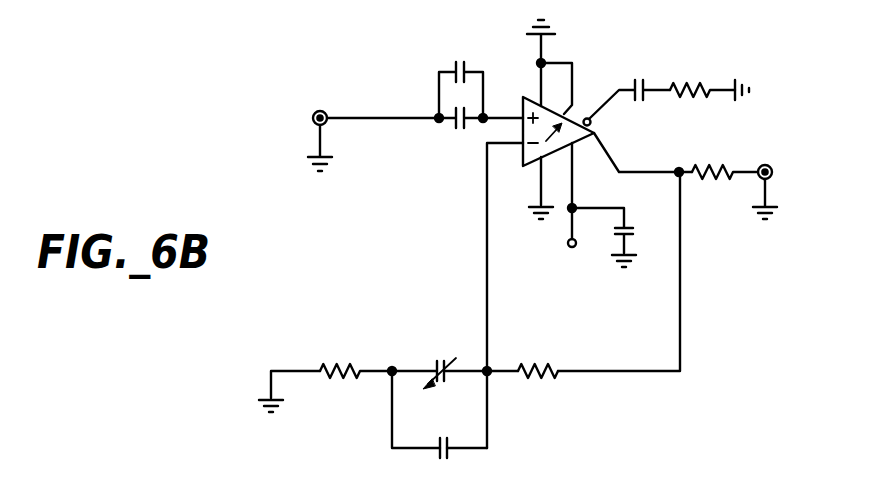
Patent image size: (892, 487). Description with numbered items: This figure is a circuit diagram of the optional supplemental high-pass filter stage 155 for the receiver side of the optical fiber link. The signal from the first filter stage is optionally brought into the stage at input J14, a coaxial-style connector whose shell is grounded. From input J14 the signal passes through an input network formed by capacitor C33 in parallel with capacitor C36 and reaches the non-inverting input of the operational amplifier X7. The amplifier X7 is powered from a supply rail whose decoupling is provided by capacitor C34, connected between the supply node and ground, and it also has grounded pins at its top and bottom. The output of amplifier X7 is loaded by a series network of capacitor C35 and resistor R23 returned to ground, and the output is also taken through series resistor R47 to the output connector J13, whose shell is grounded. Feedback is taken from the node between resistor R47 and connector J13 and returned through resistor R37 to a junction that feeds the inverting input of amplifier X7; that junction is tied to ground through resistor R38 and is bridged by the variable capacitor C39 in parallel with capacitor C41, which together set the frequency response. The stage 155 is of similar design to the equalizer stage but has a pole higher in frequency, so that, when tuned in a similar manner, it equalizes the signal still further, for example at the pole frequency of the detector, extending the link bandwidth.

The supplemental high-pass filter stage 155 is at (236, 124).
The input J14 is at (325, 109).
The output connector J13 is at (767, 163).
The input coupling capacitor C33 is at (470, 124).
The parallel input capacitor C36 is at (473, 42).
The operational amplifier X7 is at (577, 143).
The supply bypass capacitor C34 is at (631, 237).
The output compensation capacitor C35 is at (646, 84).
The output compensation resistor R23 is at (688, 102).
The output series resistor R47 is at (703, 161).
The feedback ground resistor R38 is at (341, 362).
The variable feedback capacitor C39 is at (433, 364).
The feedback capacitor C41 is at (435, 447).
The feedback resistor R37 is at (545, 360).